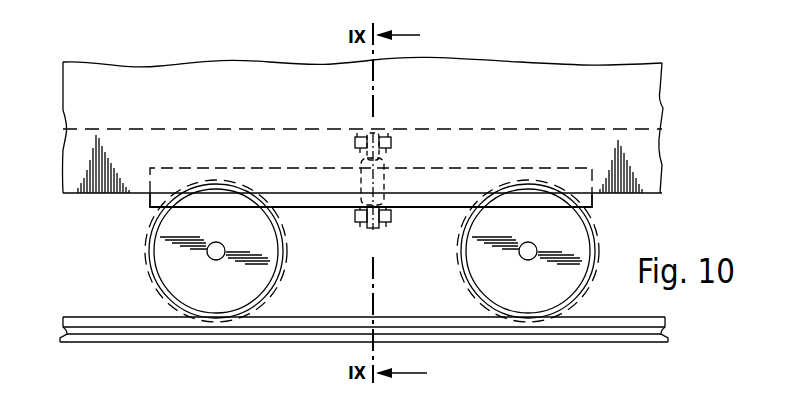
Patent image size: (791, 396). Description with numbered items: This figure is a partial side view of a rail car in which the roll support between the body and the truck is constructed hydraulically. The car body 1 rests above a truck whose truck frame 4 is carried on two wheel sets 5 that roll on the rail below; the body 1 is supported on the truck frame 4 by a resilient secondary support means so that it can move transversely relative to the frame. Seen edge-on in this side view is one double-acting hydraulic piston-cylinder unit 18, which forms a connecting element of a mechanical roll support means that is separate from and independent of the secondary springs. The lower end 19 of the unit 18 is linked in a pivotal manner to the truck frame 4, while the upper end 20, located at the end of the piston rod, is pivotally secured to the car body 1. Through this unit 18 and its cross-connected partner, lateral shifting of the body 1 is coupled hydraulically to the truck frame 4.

The car body 1 is at (655, 108).
The truck frame 4 is at (154, 203).
The wheel sets 5 is at (132, 267).
The double-acting hydraulic piston-cylinder unit 18 is at (380, 186).
The lower end 19 is at (372, 228).
The upper end 20 is at (378, 138).